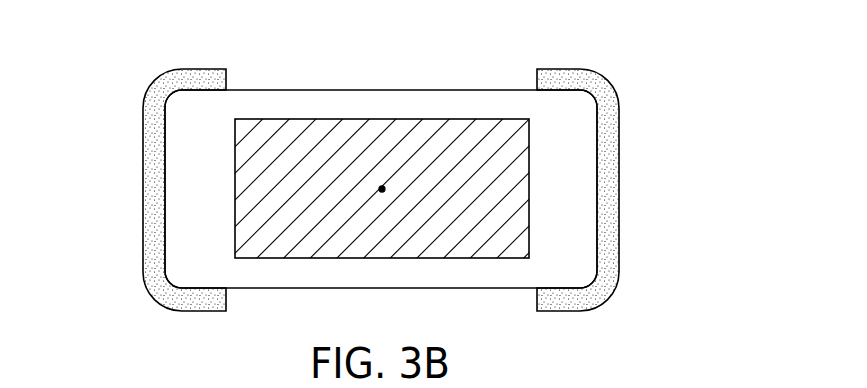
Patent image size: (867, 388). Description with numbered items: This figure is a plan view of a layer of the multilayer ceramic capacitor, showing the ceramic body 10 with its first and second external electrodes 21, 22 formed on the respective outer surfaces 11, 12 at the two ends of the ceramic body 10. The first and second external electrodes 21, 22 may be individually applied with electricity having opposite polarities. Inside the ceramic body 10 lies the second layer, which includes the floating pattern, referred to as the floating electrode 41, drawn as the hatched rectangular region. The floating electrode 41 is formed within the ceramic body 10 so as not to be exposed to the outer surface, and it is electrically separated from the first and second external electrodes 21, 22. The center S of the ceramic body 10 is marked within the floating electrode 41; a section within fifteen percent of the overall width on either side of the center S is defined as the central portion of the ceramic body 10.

The ceramic body 10 is at (278, 103).
The outer surface of the ceramic body 11 is at (164, 210).
The outer surface of the ceramic body 12 is at (598, 210).
The first external electrode 21 is at (192, 78).
The second external electrode 22 is at (563, 78).
The floating electrode 41 is at (327, 120).
The center of the ceramic body S is at (383, 188).